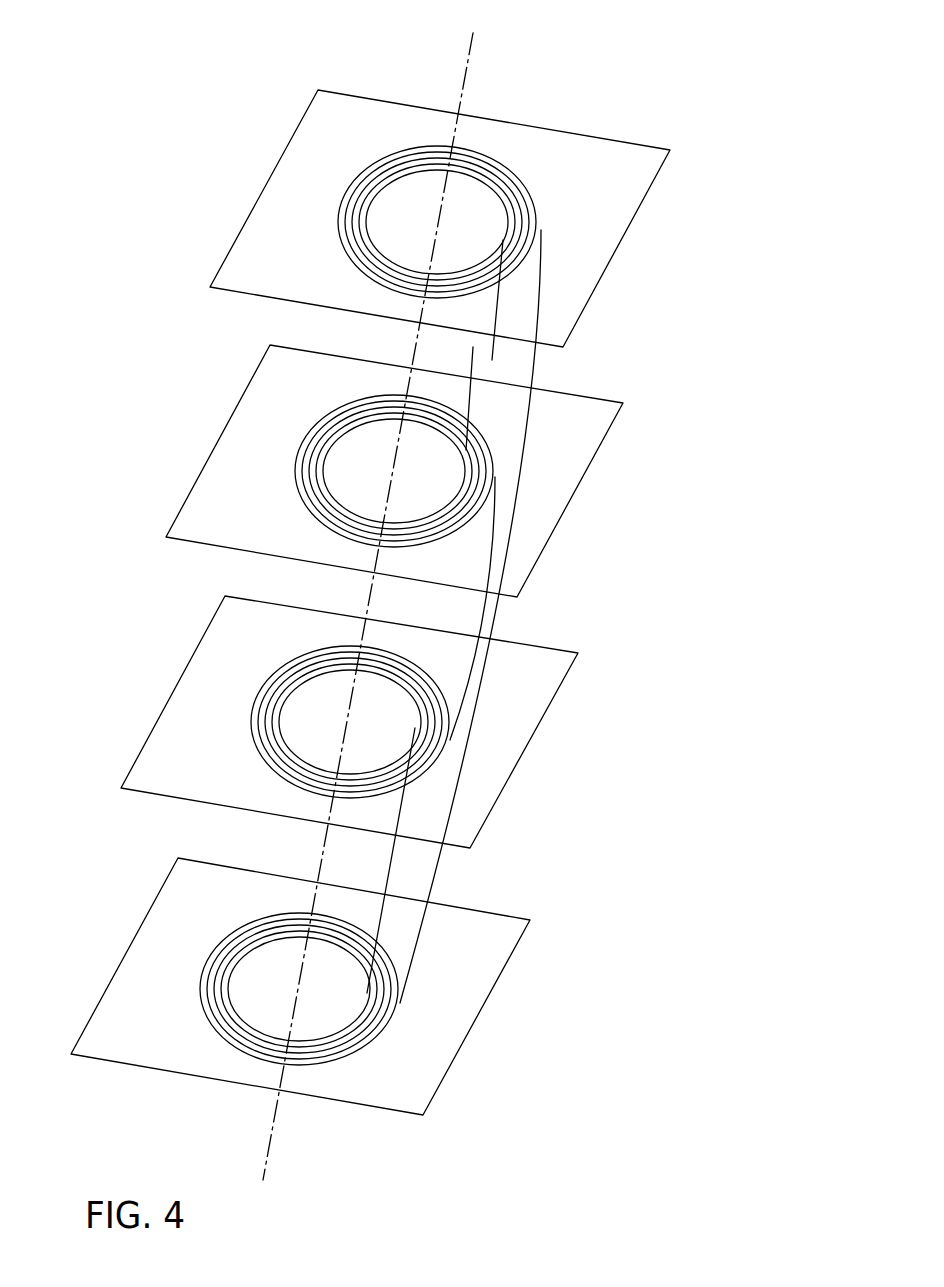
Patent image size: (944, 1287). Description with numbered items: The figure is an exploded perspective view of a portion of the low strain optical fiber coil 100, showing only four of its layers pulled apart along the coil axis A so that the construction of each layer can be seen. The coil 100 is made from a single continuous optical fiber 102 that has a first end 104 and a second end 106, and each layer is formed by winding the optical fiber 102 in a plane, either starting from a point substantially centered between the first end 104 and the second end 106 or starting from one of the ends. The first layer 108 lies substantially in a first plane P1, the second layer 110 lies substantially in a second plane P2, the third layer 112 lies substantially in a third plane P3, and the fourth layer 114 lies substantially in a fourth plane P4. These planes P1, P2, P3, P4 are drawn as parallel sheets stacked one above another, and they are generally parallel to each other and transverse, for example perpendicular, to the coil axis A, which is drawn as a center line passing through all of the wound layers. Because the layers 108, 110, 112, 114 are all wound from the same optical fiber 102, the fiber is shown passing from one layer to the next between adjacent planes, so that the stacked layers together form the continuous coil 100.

The low strain optical fiber coil 100 is at (405, 595).
The continuous optical fiber 102 is at (377, 1050).
The first end 104 is at (497, 318).
The second end 106 is at (473, 398).
The first layer 108 is at (300, 986).
The second layer 110 is at (349, 722).
The third layer 112 is at (394, 471).
The fourth layer 114 is at (440, 218).
The coil axis A is at (465, 96).
The first plane P1 is at (92, 1039).
The second plane P2 is at (130, 780).
The third plane P3 is at (182, 522).
The fourth plane P4 is at (223, 272).